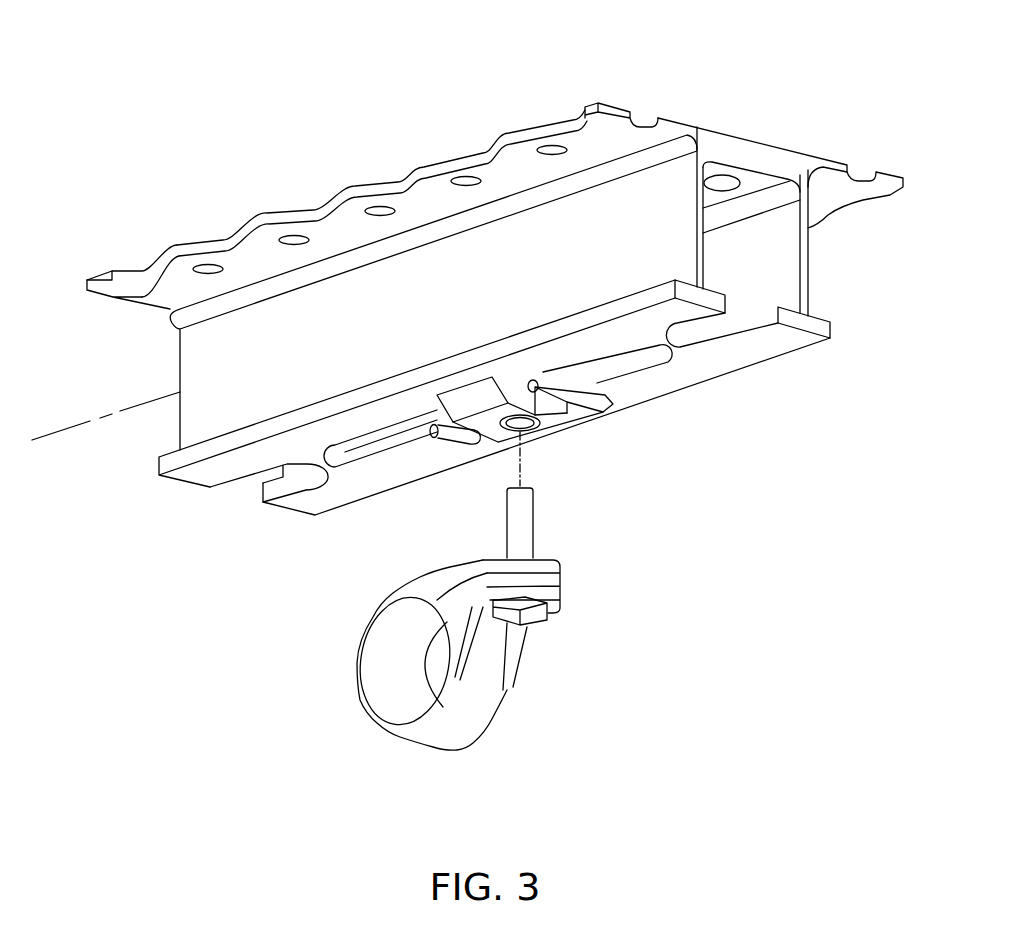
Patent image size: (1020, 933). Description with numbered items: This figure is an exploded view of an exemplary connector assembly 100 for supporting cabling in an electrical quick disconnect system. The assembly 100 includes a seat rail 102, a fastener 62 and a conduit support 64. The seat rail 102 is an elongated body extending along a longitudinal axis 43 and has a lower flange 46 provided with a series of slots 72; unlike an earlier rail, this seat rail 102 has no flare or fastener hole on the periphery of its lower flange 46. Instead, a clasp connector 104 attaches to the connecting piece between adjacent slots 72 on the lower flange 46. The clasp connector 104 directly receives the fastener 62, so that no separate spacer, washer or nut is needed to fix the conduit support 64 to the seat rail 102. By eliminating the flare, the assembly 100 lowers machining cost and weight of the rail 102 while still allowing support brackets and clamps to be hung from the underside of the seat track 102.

The connector assembly 100 is at (400, 74).
The seat rail 102 is at (700, 112).
The clasp connector 104 is at (477, 397).
The slots 72 is at (378, 436).
The longitudinal axis 43 is at (62, 428).
The lower flange 46 is at (217, 468).
The fastener 62 is at (537, 522).
The conduit support 64 is at (493, 707).